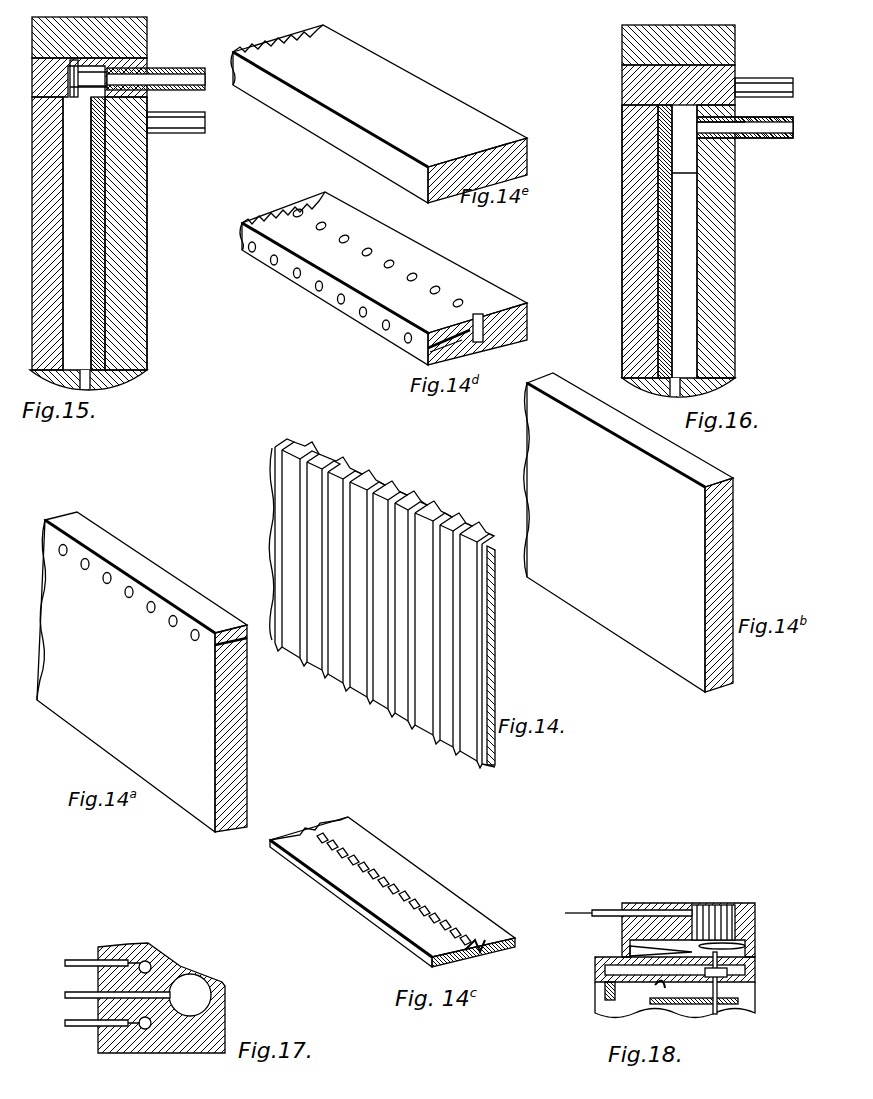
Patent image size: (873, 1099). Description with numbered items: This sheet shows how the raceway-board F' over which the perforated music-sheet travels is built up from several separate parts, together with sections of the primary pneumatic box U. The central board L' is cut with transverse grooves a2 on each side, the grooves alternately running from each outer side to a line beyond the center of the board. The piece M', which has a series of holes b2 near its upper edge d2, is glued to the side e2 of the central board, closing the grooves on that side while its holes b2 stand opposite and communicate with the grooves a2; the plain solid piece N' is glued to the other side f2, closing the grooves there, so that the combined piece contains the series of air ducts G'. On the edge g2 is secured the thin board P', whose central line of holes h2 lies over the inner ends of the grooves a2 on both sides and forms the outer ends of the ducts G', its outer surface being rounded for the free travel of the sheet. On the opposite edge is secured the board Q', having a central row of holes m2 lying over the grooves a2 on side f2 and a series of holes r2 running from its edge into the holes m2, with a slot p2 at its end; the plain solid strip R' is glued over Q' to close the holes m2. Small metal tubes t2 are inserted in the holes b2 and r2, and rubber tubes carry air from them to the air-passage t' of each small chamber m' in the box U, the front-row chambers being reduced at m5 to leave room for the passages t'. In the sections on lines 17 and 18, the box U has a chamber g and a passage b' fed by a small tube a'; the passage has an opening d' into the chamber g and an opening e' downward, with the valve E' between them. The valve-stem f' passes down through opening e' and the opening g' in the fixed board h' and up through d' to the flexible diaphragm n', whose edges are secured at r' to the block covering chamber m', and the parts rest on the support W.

In FIG. 15, the plain solid strip R' is at (105, 37).
In FIG. 16, the plain solid strip R' is at (663, 45).
In FIG. 14E, the plain solid strip R' is at (379, 114).
In FIG. 15, the board Q' is at (109, 68).
In FIG. 16, the board Q' is at (665, 85).
In FIG. 14D, the board Q' is at (383, 278).
In FIG. 15, the holes m2 is at (72, 66).
In FIG. 14D, the holes m2 is at (303, 211).
In FIG. 15, the holes r2 is at (66, 88).
In FIG. 14D, the holes r2 is at (250, 252).
In FIG. 14D, the slot p2 is at (345, 312).
In FIG. 15, the small metal tube t2 is at (200, 90).
In FIG. 16, the small metal tube t2 is at (775, 78).
In FIG. 16, the holes b2 is at (740, 117).
In FIG. 14A, the holes b2 is at (63, 556).
In FIG. 15, the central board L' is at (133, 233).
In FIG. 16, the central board L' is at (725, 241).
In FIG. 14, the central board L' is at (499, 656).
In FIG. 15, the transverse board F' is at (158, 233).
In FIG. 16, the transverse board F' is at (608, 241).
In FIG. 15, the transverse grooves a2 is at (78, 250).
In FIG. 16, the transverse grooves a2 is at (683, 212).
In FIG. 14, the transverse grooves a2 is at (302, 515).
In FIG. 14A, the transverse grooves a2 is at (260, 645).
In FIG. 15, the piece M' is at (106, 233).
In FIG. 16, the piece M' is at (698, 241).
In FIG. 14A, the piece M' is at (142, 672).
In FIG. 15, the plain and solid piece N' is at (115, 312).
In FIG. 16, the plain and solid piece N' is at (707, 290).
In FIG. 14B, the plain and solid piece N' is at (628, 532).
In FIG. 15, the air ducts or passages G' is at (124, 350).
In FIG. 16, the air ducts or passages G' is at (723, 351).
In FIG. 15, the thin board P' is at (75, 382).
In FIG. 16, the thin board P' is at (700, 387).
In FIG. 14C, the thin board P' is at (392, 892).
In FIG. 15, the holes h2 is at (88, 390).
In FIG. 16, the holes h2 is at (675, 397).
In FIG. 14C, the holes h2 is at (352, 855).
In FIG. 14, the side f2 is at (424, 503).
In FIG. 14, the side e2 is at (447, 690).
In FIG. 14, the edge g2 is at (462, 770).
In FIG. 14A, the edge g2 is at (228, 832).
In FIG. 14B, the edge g2 is at (720, 692).
In FIG. 14A, the upper edge d2 is at (135, 568).
In FIG. 17, the primary pneumatic box U is at (180, 960).
In FIG. 18, the primary pneumatic box U is at (622, 936).
In FIG. 17, the small chamber m' is at (195, 1001).
In FIG. 18, the small chamber m' is at (740, 894).
In FIG. 17, the reduced upper part of chamber m5 is at (152, 948).
In FIG. 18, the reduced upper part of chamber m5 is at (675, 910).
In FIG. 17, the air-passage t' is at (127, 995).
In FIG. 18, the air-passage t' is at (628, 894).
In FIG. 17, the section line 18 is at (68, 995).
In FIG. 18, the section line 17 is at (765, 918).
In FIG. 18, the flexible diaphragm n' is at (713, 896).
In FIG. 18, the securing edge r' is at (696, 894).
In FIG. 18, the chamber g is at (639, 949).
In FIG. 18, the opening d' is at (742, 944).
In FIG. 18, the valve E' is at (697, 969).
In FIG. 18, the air-passage b' is at (585, 962).
In FIG. 18, the small tube a' is at (650, 1000).
In FIG. 18, the fixed board h' is at (592, 1008).
In FIG. 18, the support W is at (745, 995).
In FIG. 18, the valve-stem f' is at (723, 998).
In FIG. 18, the opening g' is at (760, 1017).
In FIG. 18, the opening e' is at (670, 985).